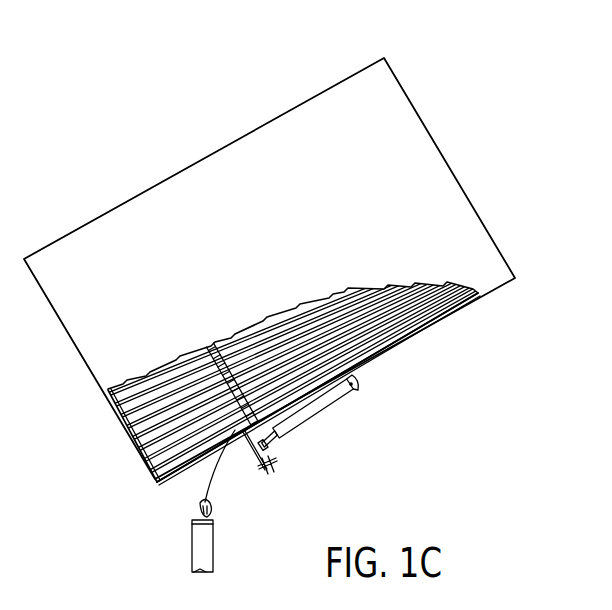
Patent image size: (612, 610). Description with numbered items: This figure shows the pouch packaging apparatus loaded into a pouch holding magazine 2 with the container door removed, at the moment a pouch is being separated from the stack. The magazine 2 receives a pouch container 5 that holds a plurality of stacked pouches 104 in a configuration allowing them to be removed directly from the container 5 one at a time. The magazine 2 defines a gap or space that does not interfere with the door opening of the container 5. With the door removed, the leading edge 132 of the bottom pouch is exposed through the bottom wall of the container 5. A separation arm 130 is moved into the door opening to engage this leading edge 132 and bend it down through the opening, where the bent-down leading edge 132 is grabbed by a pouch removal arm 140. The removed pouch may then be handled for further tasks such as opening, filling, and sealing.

The pouch container 5 is at (418, 101).
The stacked pouches 104 is at (325, 272).
The pouch holding magazine 2 is at (382, 353).
The separation arm 130 is at (328, 442).
The leading edge 132 is at (201, 491).
The pouch removal arm 140 is at (214, 539).